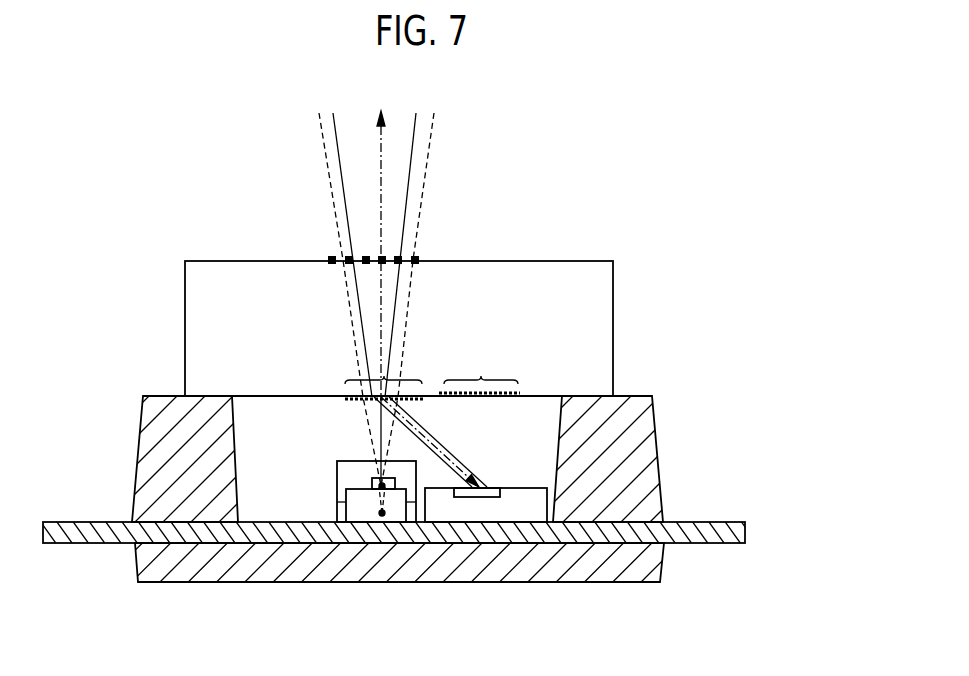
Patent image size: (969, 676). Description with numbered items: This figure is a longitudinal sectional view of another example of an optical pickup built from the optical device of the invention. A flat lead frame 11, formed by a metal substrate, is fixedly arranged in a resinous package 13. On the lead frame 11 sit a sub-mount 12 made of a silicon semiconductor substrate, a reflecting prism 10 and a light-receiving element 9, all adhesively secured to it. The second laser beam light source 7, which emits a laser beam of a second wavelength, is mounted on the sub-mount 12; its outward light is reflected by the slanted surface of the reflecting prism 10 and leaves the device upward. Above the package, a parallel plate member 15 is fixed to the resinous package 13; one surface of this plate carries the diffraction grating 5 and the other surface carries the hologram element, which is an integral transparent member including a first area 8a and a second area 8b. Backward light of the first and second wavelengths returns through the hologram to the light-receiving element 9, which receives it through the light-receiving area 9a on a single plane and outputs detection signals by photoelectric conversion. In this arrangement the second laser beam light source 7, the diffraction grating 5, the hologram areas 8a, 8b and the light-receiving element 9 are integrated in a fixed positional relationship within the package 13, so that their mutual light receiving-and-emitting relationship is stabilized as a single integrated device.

The diffraction grating 5 is at (407, 260).
The second laser beam light source 7 is at (338, 462).
The first area 8a is at (383, 377).
The second area 8b is at (481, 376).
The light-receiving element 9 is at (509, 512).
The light-receiving area 9a is at (458, 497).
The reflecting prism 10 is at (338, 492).
The lead frame 11 is at (688, 520).
The sub-mount 12 is at (358, 513).
The resinous package 13 is at (633, 573).
The parallel plate member 15 is at (613, 308).